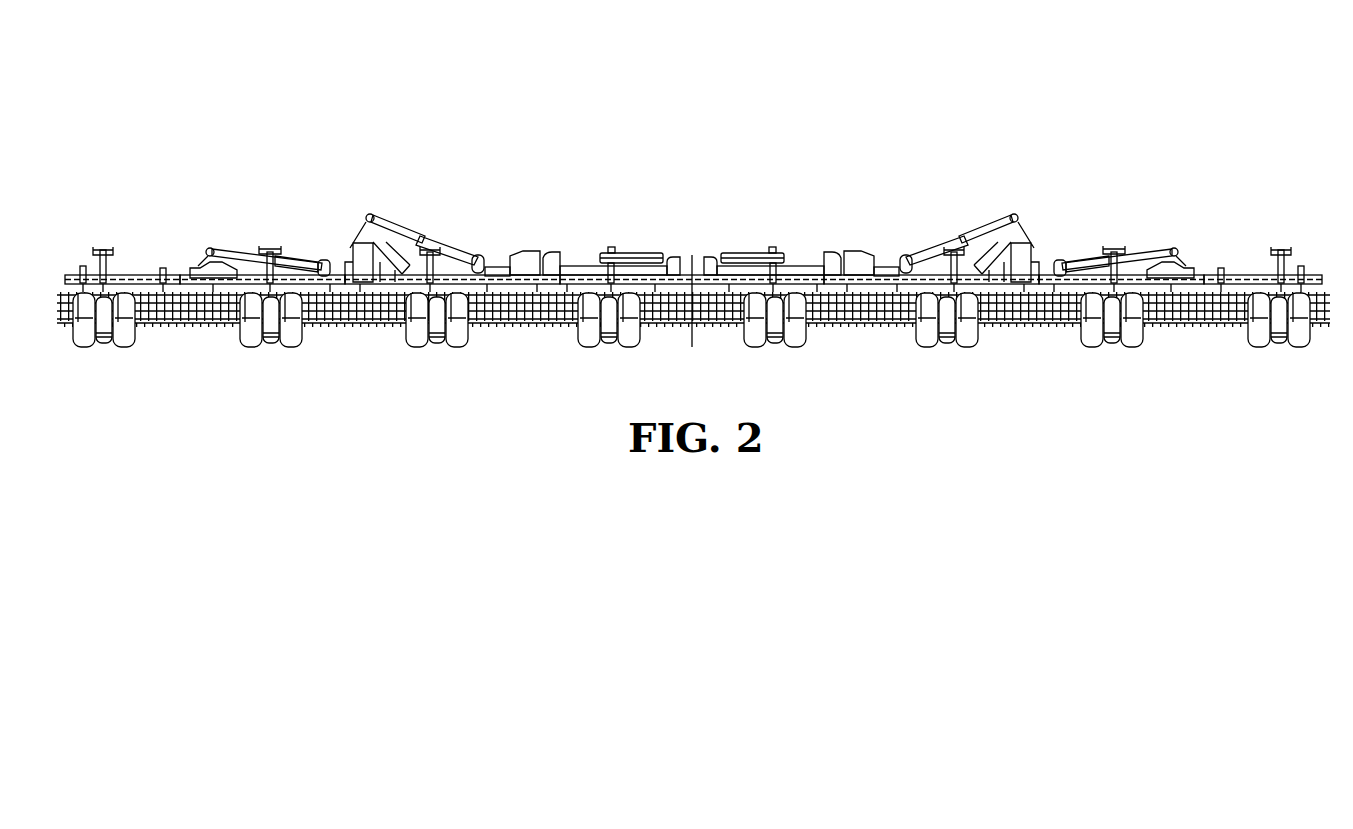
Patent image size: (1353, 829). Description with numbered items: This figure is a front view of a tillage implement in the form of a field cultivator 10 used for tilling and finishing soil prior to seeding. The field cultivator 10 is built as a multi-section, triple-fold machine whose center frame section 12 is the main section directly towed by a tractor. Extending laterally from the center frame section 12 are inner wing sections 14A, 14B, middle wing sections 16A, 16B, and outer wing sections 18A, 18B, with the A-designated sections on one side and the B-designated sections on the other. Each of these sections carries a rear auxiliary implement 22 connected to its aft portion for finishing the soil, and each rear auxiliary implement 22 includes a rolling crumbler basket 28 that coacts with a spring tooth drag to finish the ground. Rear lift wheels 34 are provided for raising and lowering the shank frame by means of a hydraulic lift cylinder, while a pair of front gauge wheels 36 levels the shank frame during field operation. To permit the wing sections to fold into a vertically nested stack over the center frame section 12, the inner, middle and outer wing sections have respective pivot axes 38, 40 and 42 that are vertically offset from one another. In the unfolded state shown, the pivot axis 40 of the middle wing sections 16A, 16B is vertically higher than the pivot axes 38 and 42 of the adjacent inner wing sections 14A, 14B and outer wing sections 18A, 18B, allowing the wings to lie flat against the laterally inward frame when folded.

The field cultivator 10 is at (950, 100).
The center frame section 12 is at (770, 232).
The inner wing section 14A is at (947, 212).
The inner wing section 14B is at (462, 212).
The middle wing section 16A is at (1097, 230).
The middle wing section 16B is at (297, 212).
The outer wing section 18A is at (1245, 245).
The outer wing section 18B is at (145, 212).
The rear auxiliary implement 22 is at (160, 330).
The crumbler basket 28 is at (485, 340).
The rear lift wheels 34 is at (252, 348).
The front gauge wheels 36 is at (1105, 343).
The pivot axis 38 is at (557, 262).
The pivot axis 40 is at (374, 228).
The pivot axis 42 is at (195, 262).